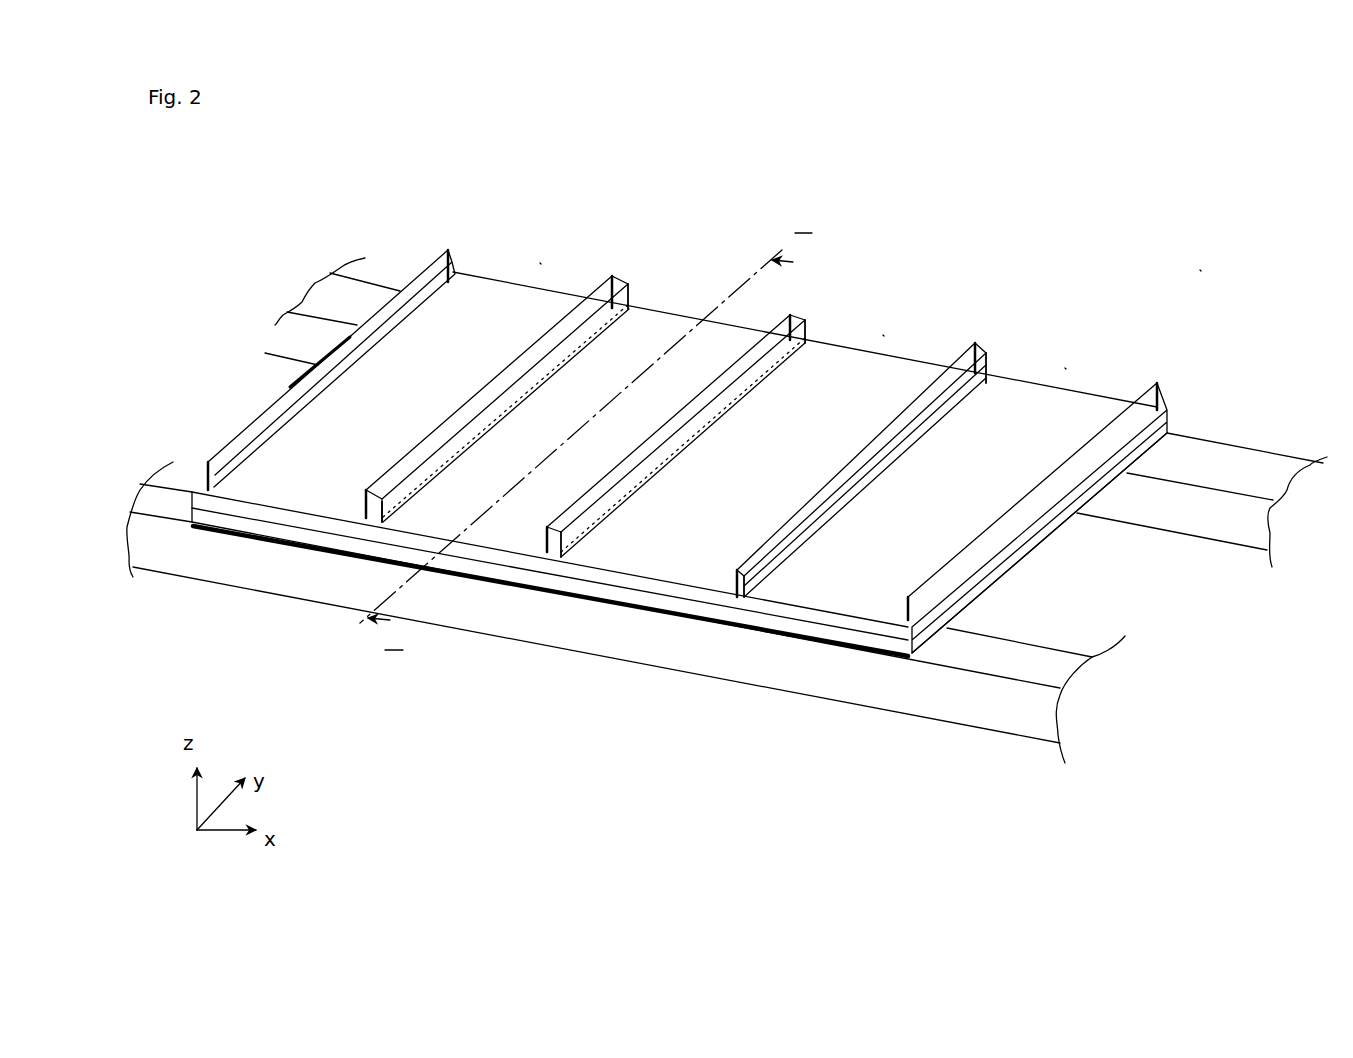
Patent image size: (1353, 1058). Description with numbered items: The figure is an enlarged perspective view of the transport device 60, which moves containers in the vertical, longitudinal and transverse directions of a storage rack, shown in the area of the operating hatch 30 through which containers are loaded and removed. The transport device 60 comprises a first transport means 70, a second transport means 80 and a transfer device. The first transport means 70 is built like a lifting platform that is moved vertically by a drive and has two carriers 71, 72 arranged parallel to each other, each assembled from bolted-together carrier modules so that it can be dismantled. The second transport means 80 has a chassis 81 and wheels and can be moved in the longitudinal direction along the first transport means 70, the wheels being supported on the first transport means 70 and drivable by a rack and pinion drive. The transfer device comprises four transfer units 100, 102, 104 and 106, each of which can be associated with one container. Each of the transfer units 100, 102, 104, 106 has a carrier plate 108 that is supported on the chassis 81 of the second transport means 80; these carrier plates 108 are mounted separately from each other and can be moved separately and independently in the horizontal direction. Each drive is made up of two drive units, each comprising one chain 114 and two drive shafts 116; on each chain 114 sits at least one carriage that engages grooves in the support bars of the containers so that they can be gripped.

The operating hatch 30 is at (258, 388).
The transport device 60 is at (1200, 270).
The first transport means 70 is at (1197, 650).
The carrier 71 is at (953, 723).
The carrier 72 is at (1160, 530).
The second transport means 80 is at (463, 565).
The chassis 81 is at (1037, 543).
The transfer unit 100 is at (540, 263).
The transfer unit 102 is at (710, 298).
The transfer unit 104 is at (883, 335).
The transfer unit 106 is at (1065, 368).
The carrier plate 108 is at (275, 520).
The chain 114 is at (440, 262).
The drive shaft 116 is at (450, 250).